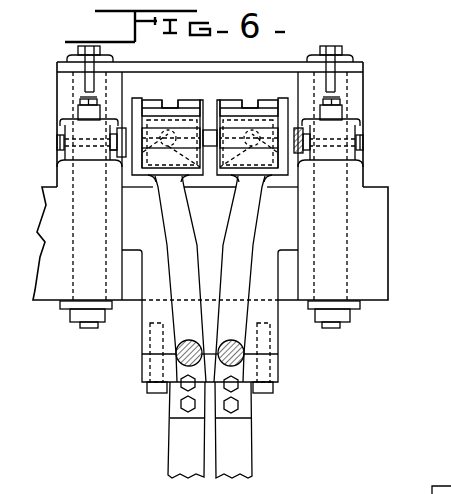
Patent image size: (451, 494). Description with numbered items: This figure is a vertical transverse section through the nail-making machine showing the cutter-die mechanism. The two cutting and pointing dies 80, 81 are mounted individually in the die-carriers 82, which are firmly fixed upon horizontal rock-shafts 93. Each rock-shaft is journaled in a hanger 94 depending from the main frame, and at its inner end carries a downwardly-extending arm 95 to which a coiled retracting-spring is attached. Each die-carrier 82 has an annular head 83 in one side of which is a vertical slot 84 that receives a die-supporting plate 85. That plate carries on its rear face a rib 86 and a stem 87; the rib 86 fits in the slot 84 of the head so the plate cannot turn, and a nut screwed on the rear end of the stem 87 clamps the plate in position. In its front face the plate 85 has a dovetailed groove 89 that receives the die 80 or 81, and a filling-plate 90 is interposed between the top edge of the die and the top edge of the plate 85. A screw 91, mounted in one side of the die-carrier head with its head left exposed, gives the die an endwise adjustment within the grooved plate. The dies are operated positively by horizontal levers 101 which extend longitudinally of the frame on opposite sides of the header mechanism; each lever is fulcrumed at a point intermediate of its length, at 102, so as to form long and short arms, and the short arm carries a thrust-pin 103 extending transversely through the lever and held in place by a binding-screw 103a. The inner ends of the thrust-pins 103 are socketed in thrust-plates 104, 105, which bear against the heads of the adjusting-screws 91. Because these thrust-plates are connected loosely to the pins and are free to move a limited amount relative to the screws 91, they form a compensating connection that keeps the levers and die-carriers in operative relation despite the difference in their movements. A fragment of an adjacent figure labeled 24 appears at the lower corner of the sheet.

The adjacent figure part 24 is at (418, 493).
The cutting and pointing die 80 is at (227, 138).
The cutting and pointing die 81 is at (188, 140).
The die-carrier 82 is at (183, 243).
The annular head 83 is at (137, 98).
The vertical slot 84 is at (172, 92).
The die-supporting plate 85 is at (157, 162).
The rib 86 is at (182, 178).
The stem 87 is at (118, 177).
The dovetailed groove 89 is at (210, 163).
The filling-plate 90 is at (170, 108).
The adjusting-screw 91 is at (281, 104).
The rock-shaft 93 is at (178, 361).
The hanger 94 is at (147, 338).
The downwardly-extending arm 95 is at (177, 446).
The lever 101 is at (62, 170).
The fulcrum 102 is at (80, 100).
The thrust-pin 103 is at (58, 143).
The binding-screw 103a is at (382, 108).
The thrust-plate 104 is at (300, 150).
The thrust-plate 105 is at (60, 183).